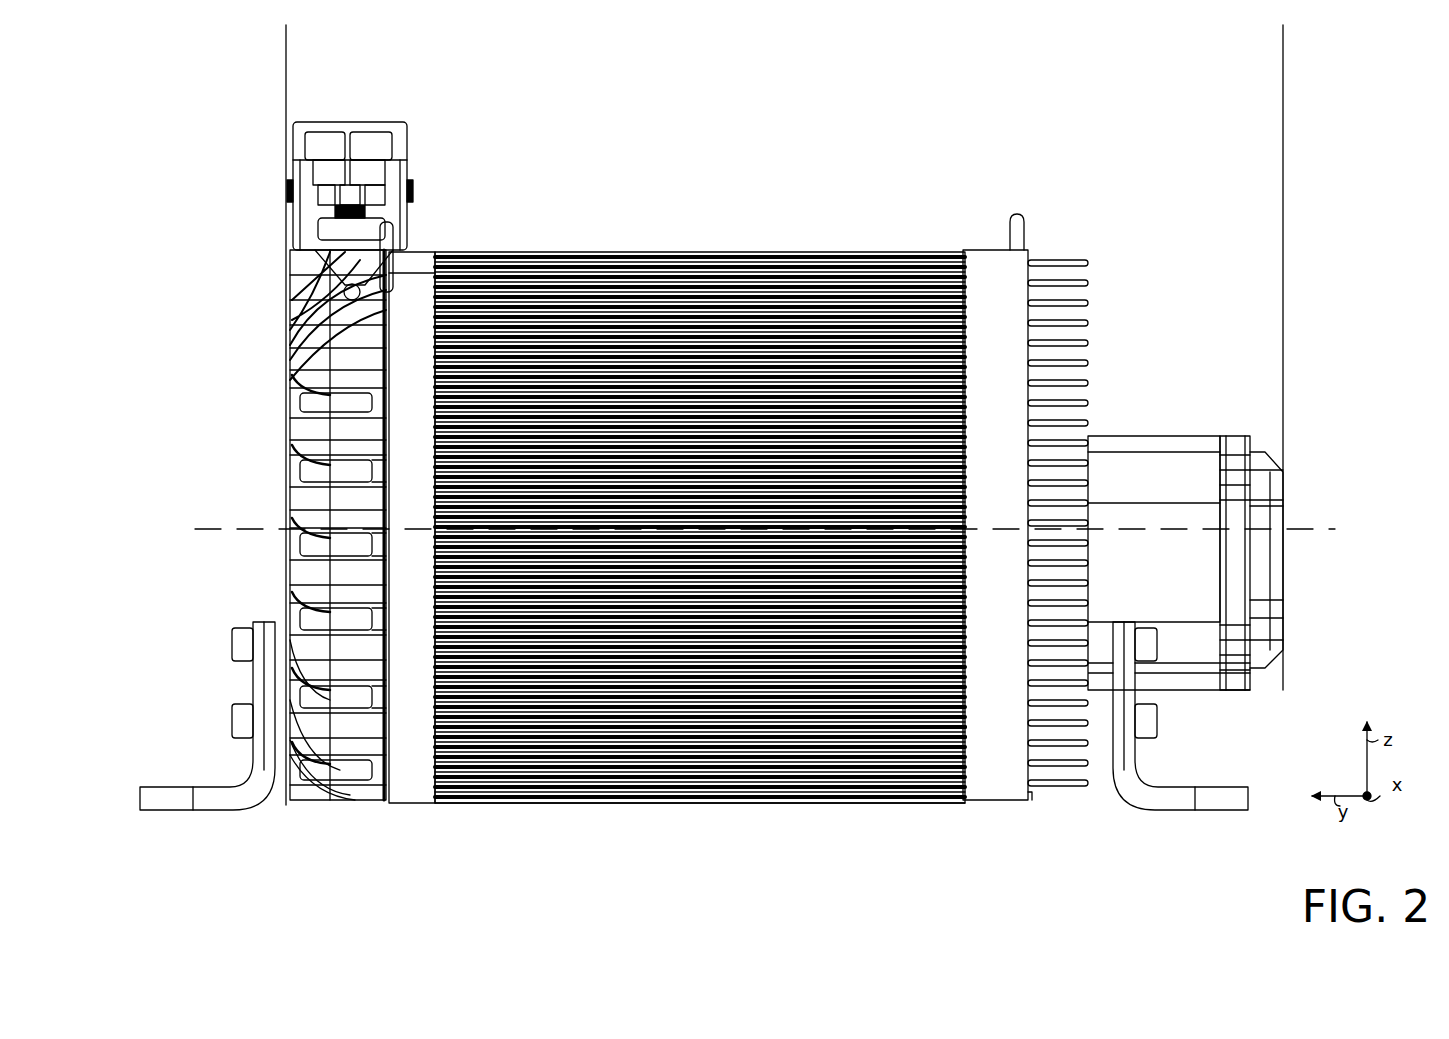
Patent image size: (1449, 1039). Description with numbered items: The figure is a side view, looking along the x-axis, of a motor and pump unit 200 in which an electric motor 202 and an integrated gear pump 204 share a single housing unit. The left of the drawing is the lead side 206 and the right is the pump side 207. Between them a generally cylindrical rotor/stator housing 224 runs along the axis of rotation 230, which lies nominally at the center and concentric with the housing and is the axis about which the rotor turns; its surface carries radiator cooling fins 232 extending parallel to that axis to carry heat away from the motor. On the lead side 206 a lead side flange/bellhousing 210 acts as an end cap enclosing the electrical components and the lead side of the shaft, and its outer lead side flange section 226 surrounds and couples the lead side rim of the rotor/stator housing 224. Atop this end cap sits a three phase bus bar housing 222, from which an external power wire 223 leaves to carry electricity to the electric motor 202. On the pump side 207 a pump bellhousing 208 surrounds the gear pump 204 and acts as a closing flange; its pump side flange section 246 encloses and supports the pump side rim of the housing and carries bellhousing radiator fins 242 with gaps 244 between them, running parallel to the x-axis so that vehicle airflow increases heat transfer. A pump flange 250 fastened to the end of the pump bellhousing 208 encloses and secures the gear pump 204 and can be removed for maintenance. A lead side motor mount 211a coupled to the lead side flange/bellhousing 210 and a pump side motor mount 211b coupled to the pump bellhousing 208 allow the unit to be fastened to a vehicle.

The motor and pump unit 200 is at (803, 140).
The electric motor 202 is at (600, 252).
The gear pump 204 is at (1130, 436).
The lead side 206 is at (161, 502).
The pump side 207 is at (1445, 526).
The pump bellhousing 208 is at (1109, 453).
The lead side flange/bellhousing 210 is at (290, 432).
The lead side motor mount 211a is at (214, 805).
The pump side motor mount 211b is at (1188, 802).
The three phase bus bar housing 222 is at (340, 125).
The external power wire 223 is at (305, 327).
The rotor/stator housing 224 is at (461, 843).
The outer lead side flange section 226 is at (405, 783).
The axis of rotation 230 is at (232, 530).
The radiator cooling fins 232 is at (672, 731).
The bellhousing radiator fins 242 is at (1087, 300).
The gaps 244 is at (1087, 314).
The pump side flange section 246 is at (990, 806).
The pump flange 250 is at (1262, 466).